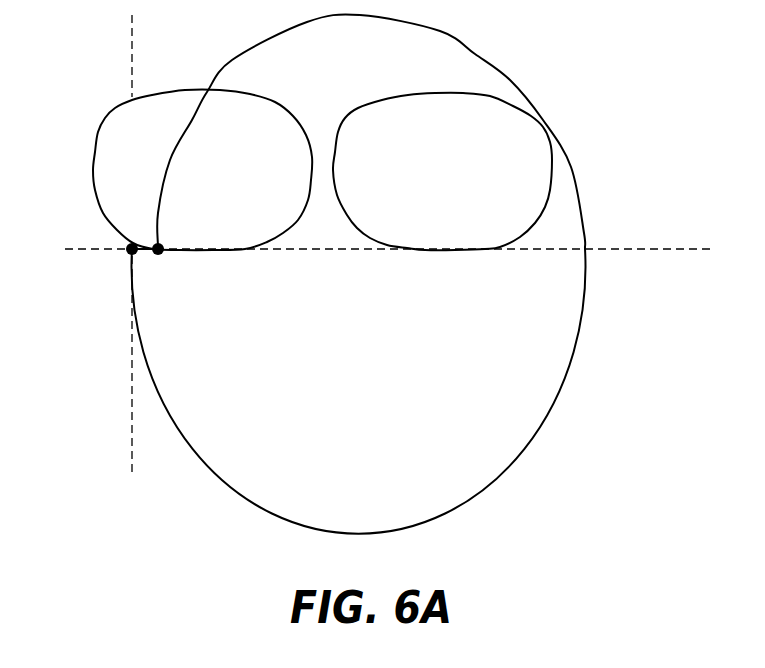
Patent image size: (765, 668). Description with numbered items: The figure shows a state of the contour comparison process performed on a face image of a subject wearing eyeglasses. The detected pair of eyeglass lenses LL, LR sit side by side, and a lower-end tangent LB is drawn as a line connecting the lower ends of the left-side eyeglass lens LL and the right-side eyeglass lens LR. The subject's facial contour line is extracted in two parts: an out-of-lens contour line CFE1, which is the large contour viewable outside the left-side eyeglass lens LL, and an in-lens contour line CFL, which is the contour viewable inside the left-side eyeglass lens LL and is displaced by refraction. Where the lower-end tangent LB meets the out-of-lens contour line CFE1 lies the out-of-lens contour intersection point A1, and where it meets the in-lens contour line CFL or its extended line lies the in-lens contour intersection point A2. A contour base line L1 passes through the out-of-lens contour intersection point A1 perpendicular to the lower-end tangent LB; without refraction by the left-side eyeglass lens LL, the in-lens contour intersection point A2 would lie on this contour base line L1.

The out-of-lens contour line CFE1 is at (530, 104).
The in-lens contour line CFL is at (195, 119).
The left-side eyeglass lens LL is at (230, 183).
The right-side eyeglass lens LR is at (463, 183).
The lower-end tangent LB is at (372, 247).
The contour base line L1 is at (128, 267).
The out-of-lens contour intersection point A1 is at (125, 255).
The in-lens contour intersection point A2 is at (163, 256).